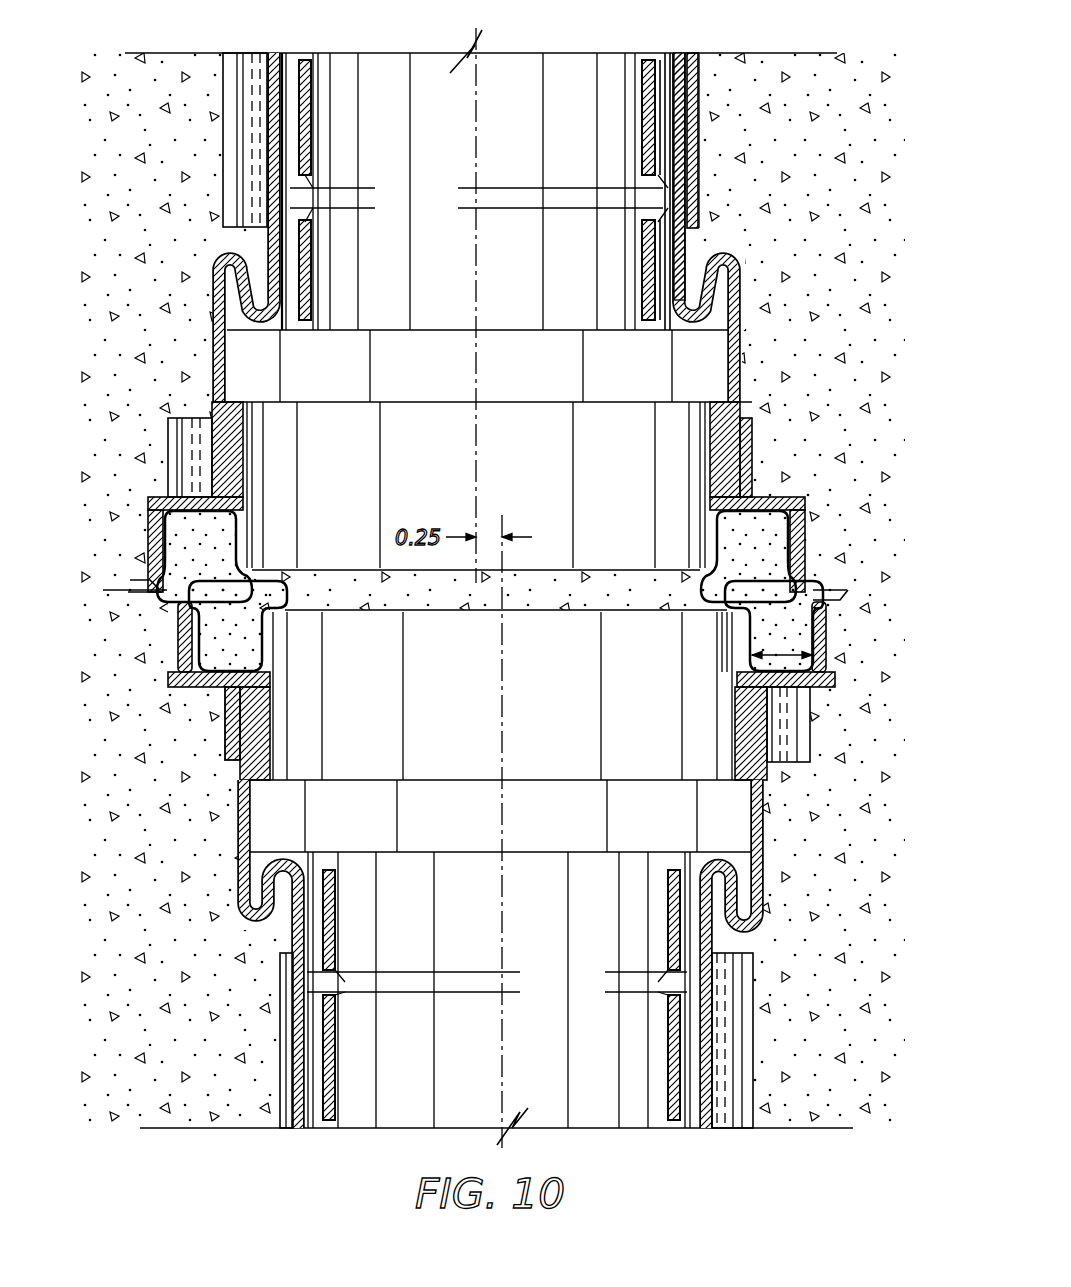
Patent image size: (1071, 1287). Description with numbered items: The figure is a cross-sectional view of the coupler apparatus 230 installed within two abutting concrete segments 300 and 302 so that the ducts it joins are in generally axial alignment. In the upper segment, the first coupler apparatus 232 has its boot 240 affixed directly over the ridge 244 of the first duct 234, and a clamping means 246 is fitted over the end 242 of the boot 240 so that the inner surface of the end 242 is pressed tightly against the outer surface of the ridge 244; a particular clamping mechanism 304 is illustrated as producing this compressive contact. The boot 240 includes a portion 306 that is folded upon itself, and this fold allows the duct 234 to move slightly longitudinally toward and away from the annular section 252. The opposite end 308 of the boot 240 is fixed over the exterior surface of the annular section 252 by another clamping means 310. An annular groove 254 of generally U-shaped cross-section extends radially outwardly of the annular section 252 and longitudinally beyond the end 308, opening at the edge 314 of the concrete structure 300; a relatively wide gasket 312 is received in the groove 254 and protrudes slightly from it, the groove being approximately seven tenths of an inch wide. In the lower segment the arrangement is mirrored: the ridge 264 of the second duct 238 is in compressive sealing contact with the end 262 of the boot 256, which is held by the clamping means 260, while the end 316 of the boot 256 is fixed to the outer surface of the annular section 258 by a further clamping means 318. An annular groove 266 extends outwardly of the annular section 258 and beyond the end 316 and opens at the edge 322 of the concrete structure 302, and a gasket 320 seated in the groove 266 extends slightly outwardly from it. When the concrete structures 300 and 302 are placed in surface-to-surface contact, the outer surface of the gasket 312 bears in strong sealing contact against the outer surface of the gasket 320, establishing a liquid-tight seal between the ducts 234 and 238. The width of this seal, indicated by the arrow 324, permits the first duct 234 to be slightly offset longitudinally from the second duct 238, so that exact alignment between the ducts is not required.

The concrete segment 300 is at (775, 62).
The concrete segment 302 is at (840, 872).
The clamping mechanism 304 is at (232, 146).
The folded portion 306 is at (216, 285).
The coupler apparatus 230 is at (748, 193).
The first coupler apparatus 232 is at (742, 312).
The duct 234 is at (648, 135).
The second duct 238 is at (331, 935).
The boot 240 is at (733, 385).
The end 242 is at (697, 116).
The ridge 244 is at (684, 196).
The clamping means 246 is at (700, 160).
The annular section 252 is at (246, 402).
The annular groove 254 is at (242, 528).
The boot 256 is at (246, 852).
The annular section 258 is at (268, 764).
The clamping means 260 is at (293, 1040).
The end 262 is at (290, 1100).
The ridge 264 is at (330, 986).
The annular groove 266 is at (254, 632).
The end 308 is at (234, 484).
The clamping means 310 is at (185, 428).
The gasket 312 is at (228, 570).
The edge 314 is at (124, 596).
The end 316 is at (262, 716).
The clamping means 318 is at (796, 728).
The gasket 320 is at (728, 622).
The edge 322 is at (850, 592).
The arrow 324 is at (782, 640).